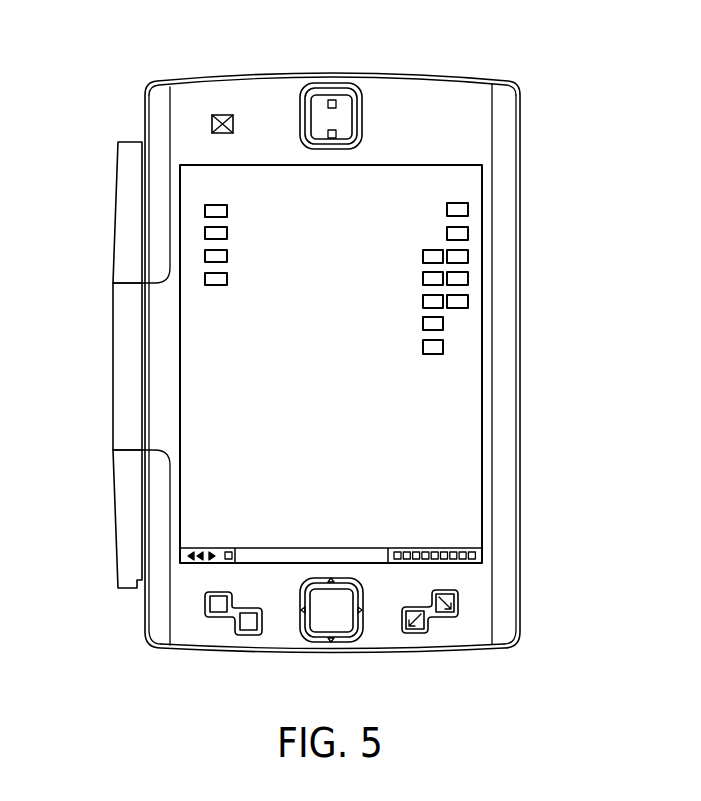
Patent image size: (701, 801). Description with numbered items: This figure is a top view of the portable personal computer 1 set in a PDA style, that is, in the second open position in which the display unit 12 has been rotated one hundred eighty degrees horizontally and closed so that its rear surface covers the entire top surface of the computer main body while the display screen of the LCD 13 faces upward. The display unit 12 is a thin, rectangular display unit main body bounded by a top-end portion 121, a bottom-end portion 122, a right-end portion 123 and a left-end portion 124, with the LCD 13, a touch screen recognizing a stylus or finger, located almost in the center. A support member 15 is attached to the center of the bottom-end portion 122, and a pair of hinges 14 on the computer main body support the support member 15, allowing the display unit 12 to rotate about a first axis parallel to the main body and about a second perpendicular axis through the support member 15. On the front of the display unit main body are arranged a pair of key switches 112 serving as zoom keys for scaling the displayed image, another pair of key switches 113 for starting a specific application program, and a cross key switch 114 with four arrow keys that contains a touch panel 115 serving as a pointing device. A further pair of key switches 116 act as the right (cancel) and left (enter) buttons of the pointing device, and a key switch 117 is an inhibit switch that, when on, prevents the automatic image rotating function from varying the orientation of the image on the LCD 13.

The portable personal computer 1 is at (557, 248).
The display unit 12 is at (510, 87).
The LCD 13 is at (458, 493).
The hinges 14 is at (125, 222).
The support member 15 is at (125, 366).
The key switches 112 is at (437, 617).
The key switches 113 is at (230, 626).
The key switch 114 is at (320, 641).
The touch panel 115 is at (337, 617).
The key switches 116 is at (336, 133).
The key switch 117 is at (233, 122).
The top-end portion 121 is at (521, 313).
The bottom-end portion 122 is at (147, 113).
The right-end portion 123 is at (163, 647).
The left-end portion 124 is at (183, 79).